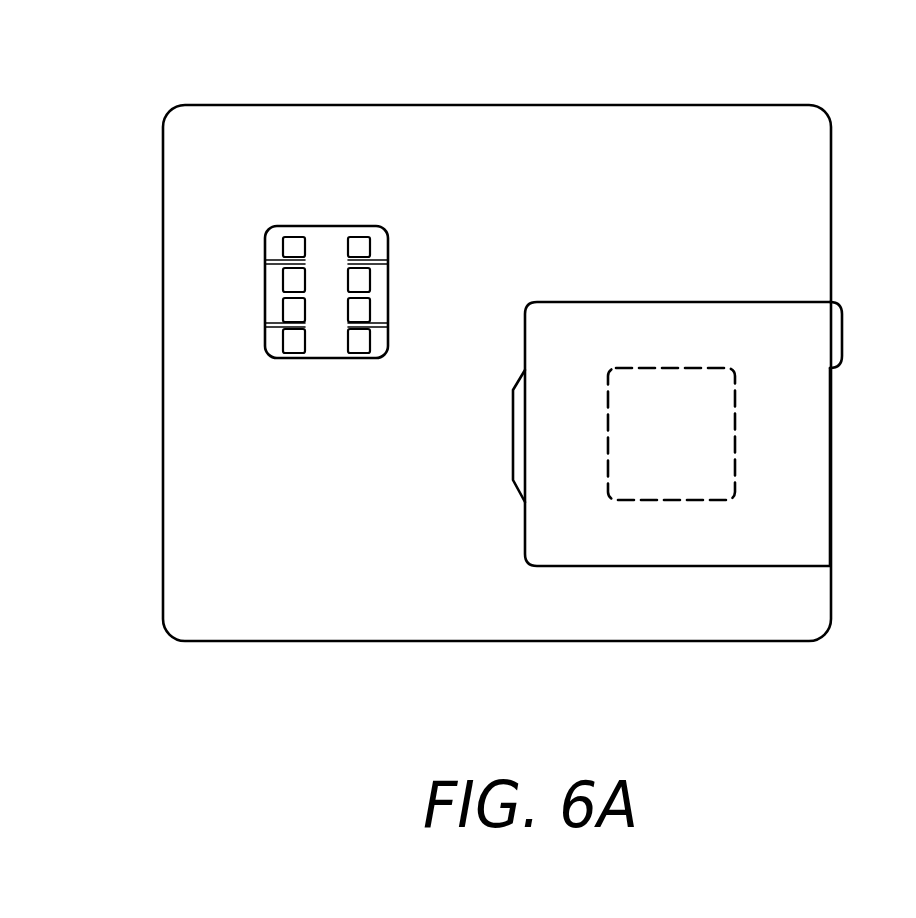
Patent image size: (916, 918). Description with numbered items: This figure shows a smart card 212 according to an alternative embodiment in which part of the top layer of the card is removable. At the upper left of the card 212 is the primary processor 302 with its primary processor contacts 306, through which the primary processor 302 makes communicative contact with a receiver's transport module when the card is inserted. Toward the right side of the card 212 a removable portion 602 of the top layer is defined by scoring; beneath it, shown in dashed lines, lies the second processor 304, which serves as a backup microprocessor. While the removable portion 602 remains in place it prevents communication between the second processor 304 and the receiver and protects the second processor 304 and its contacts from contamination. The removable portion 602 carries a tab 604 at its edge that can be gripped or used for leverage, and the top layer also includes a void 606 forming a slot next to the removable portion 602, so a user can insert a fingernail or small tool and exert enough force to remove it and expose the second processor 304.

The smart card 212 is at (450, 105).
The primary processor 302 is at (230, 202).
The primary processor contacts 306 is at (355, 237).
The removable portion 602 is at (666, 440).
The tab 604 is at (842, 335).
The void 606 is at (513, 447).
The second processor 304 is at (678, 500).